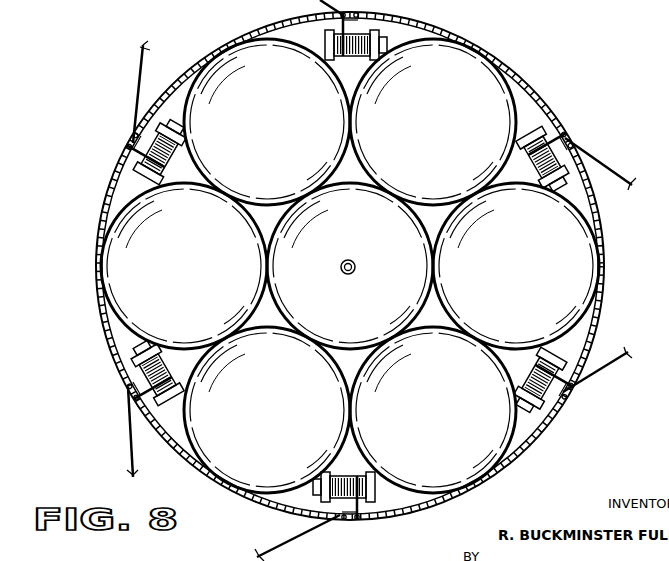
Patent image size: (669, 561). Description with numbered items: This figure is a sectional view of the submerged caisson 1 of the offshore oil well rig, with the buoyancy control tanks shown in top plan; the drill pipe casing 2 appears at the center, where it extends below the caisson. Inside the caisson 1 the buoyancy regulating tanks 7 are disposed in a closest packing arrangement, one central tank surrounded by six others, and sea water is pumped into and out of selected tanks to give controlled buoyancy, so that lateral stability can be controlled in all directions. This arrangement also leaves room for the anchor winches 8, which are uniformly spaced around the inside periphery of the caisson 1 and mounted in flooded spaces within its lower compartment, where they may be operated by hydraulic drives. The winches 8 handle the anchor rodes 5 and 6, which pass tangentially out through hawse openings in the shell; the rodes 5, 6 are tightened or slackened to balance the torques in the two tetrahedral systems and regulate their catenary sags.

The caisson 1 is at (102, 218).
The drill pipe casing 2 is at (346, 259).
The anchor rode 5 is at (138, 108).
The anchor rode 6 is at (322, 3).
The buoyancy regulating tank 7 is at (456, 405).
The anchor winch 8 is at (133, 143).